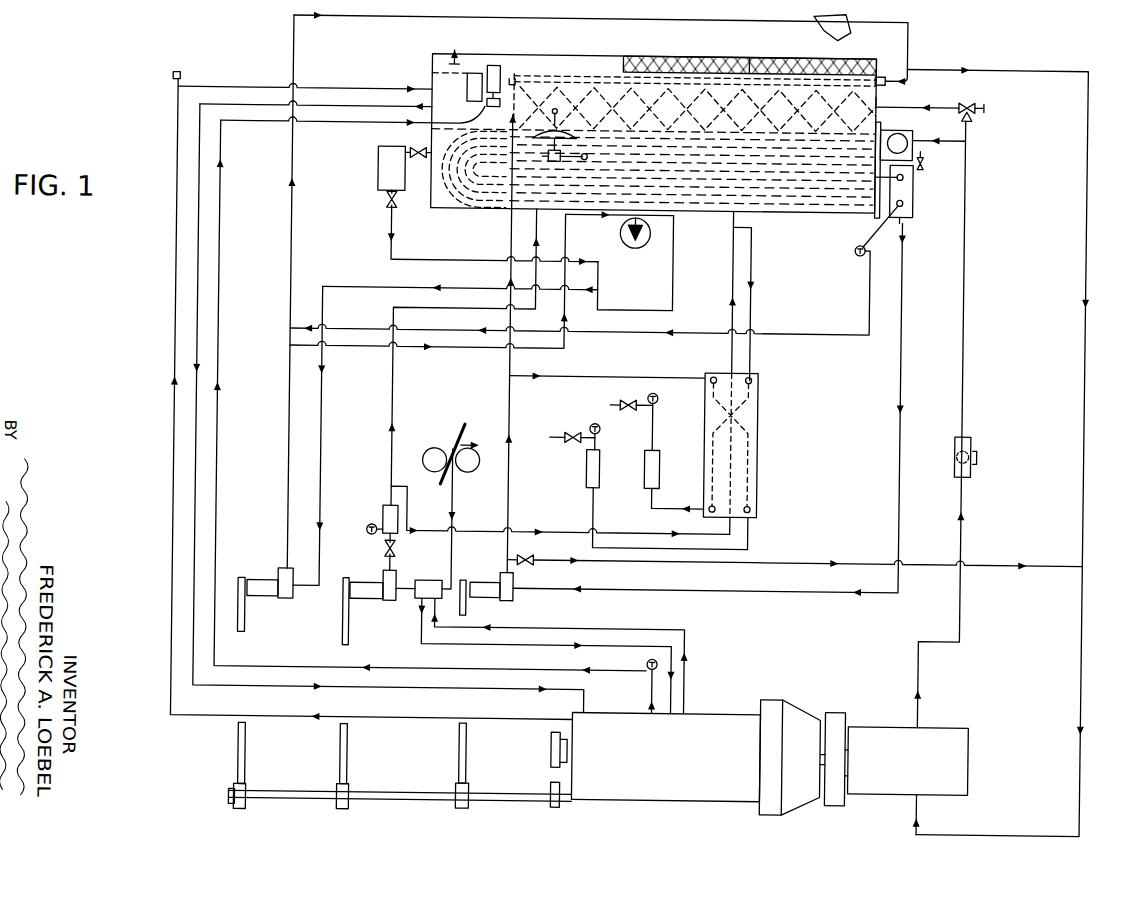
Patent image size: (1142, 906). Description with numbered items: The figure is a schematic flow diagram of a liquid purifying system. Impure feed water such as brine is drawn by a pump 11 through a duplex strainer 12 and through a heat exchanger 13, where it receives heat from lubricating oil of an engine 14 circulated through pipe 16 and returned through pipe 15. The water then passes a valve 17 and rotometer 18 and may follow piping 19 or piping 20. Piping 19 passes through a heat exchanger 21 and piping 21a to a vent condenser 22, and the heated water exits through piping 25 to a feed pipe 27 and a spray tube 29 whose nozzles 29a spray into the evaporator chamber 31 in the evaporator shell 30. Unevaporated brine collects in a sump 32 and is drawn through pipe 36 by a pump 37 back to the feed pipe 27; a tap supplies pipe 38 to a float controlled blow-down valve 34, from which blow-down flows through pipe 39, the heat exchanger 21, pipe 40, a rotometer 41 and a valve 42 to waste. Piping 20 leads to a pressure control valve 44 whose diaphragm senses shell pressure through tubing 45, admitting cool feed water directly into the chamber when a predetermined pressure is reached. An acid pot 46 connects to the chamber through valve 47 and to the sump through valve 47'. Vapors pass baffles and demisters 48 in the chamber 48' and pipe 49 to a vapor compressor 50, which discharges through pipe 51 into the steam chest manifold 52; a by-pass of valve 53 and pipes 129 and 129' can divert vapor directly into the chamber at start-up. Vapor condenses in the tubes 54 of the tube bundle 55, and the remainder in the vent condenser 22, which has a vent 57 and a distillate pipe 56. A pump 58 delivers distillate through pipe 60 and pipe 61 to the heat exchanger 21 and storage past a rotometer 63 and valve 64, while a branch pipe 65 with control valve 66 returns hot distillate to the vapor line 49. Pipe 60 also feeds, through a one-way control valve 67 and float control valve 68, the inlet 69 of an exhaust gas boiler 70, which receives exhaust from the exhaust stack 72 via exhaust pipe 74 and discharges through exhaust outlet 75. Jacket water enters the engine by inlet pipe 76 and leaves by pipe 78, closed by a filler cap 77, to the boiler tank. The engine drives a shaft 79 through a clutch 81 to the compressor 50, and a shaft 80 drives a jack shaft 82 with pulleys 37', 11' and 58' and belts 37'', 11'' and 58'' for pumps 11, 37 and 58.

The pump 11 is at (378, 608).
The pulley 11' is at (355, 808).
The belt 11'' is at (359, 754).
The duplex strainer 12 is at (462, 436).
The heat exchanger 13 is at (426, 578).
The engine 14 is at (727, 716).
The pipe 15 is at (552, 642).
The pipe 16 is at (638, 624).
The valve 17 is at (391, 548).
The rotometer 18 is at (389, 515).
The piping 19 is at (431, 527).
The piping 20 is at (397, 402).
The heat exchanger 21 is at (762, 415).
The piping 21a is at (733, 350).
The vent condenser 22 is at (915, 187).
The piping 25 is at (860, 240).
The feed pipe 27 is at (292, 299).
The spray tube 29 is at (737, 68).
The nozzles 29a is at (698, 109).
The evaporator shell 30 is at (878, 98).
The evaporator chamber 31 is at (880, 94).
The sump 32 is at (676, 281).
The float controlled blow-down valve 34 is at (654, 238).
The pipe 36 is at (326, 437).
The pump 37 is at (256, 585).
The pulley 37' is at (255, 807).
The belt 37'' is at (258, 752).
The pipe 38 is at (353, 352).
The pipe 39 is at (756, 303).
The pipe 40 is at (657, 434).
The rotometer 41 is at (660, 478).
The valve 42 is at (625, 404).
The pressure control valve 44 is at (546, 157).
The tubing 45 is at (552, 122).
The acid pot 46 is at (380, 165).
The valve 47 is at (413, 187).
The valve 47' is at (362, 224).
The baffles and demisters 48 is at (750, 48).
The chamber 48' is at (846, 40).
The pipe 49 is at (1089, 275).
The vapor compressor 50 is at (960, 720).
The pipe 51 is at (968, 312).
The steam chest manifold 52 is at (912, 127).
The valve 53 is at (975, 95).
The tubes 54 is at (845, 132).
The tube bundle 55 is at (810, 199).
The distillate pipe 56 is at (905, 338).
The vent 57 is at (925, 156).
The pump 58 is at (486, 579).
The pulley 58' is at (477, 807).
The belt 58'' is at (483, 753).
The pipe 60 is at (514, 472).
The pipe 61 is at (612, 352).
The rotometer 63 is at (603, 478).
The valve 64 is at (578, 428).
The branch pipe 65 is at (820, 557).
The control valve 66 is at (536, 558).
The one-way control valve 67 is at (508, 112).
The float control valve 68 is at (497, 70).
The inlet 69 is at (478, 70).
The exhaust gas boiler 70 is at (433, 70).
The exhaust stack 72 is at (655, 696).
The exhaust pipe 74 is at (224, 285).
The exhaust outlet 75 is at (455, 50).
The inlet pipe 76 is at (462, 690).
The filler cap 77 is at (183, 80).
The outlet pipe 78 is at (177, 292).
The shaft 79 is at (818, 763).
The shaft 80 is at (558, 752).
The clutch 81 is at (837, 706).
The jack shaft 82 is at (518, 791).
The pipe 129 is at (997, 161).
The pipe 129' is at (943, 72).